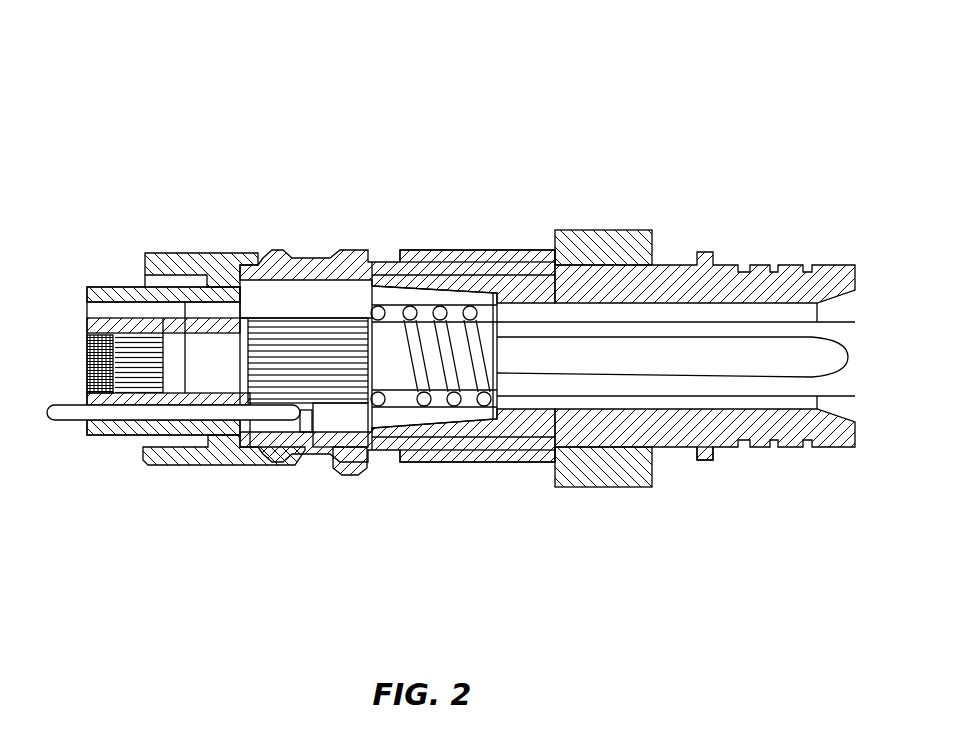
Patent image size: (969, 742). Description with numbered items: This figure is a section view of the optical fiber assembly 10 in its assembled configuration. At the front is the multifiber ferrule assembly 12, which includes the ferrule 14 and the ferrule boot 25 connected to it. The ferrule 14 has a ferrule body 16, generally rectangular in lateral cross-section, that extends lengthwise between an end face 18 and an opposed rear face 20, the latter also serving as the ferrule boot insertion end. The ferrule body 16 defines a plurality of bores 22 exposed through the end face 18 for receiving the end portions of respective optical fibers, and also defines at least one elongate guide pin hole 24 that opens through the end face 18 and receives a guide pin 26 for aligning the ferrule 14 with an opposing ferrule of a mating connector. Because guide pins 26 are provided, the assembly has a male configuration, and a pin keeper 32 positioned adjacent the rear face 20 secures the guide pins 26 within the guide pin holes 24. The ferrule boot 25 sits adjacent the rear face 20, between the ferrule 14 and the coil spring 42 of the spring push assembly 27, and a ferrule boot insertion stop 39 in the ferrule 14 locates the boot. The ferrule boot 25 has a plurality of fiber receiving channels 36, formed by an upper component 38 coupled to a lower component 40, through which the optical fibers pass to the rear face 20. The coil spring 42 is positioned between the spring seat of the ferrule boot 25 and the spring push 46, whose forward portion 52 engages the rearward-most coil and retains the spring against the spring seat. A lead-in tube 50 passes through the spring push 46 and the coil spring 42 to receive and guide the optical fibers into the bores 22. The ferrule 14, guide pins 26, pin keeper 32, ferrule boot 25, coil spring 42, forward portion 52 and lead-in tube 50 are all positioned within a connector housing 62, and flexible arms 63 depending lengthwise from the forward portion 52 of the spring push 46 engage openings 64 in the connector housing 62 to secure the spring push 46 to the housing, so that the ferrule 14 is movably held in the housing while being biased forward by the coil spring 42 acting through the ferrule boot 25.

The optical fiber assembly 10 is at (468, 301).
The multifiber ferrule assembly 12 is at (326, 284).
The ferrule 14 is at (108, 278).
The ferrule body 16 is at (93, 307).
The end face 18 is at (87, 390).
The rear face 20 is at (287, 410).
The bores 22 is at (87, 348).
The guide pin hole 24 is at (132, 307).
The ferrule boot 25 is at (347, 428).
The guide pin 26 is at (62, 422).
The spring push assembly 27 is at (687, 243).
The pin keeper 32 is at (248, 300).
The fiber receiving channels 36 is at (341, 342).
The upper component 38 is at (330, 405).
The ferrule boot insertion stop 39 is at (255, 405).
The lower component 40 is at (302, 333).
The coil spring 42 is at (454, 390).
The spring push 46 is at (668, 461).
The lead-in tube 50 is at (847, 327).
The forward portion 52 is at (570, 250).
The connector housing 62 is at (180, 477).
The flexible arms 63 is at (462, 268).
The openings 64 is at (375, 262).